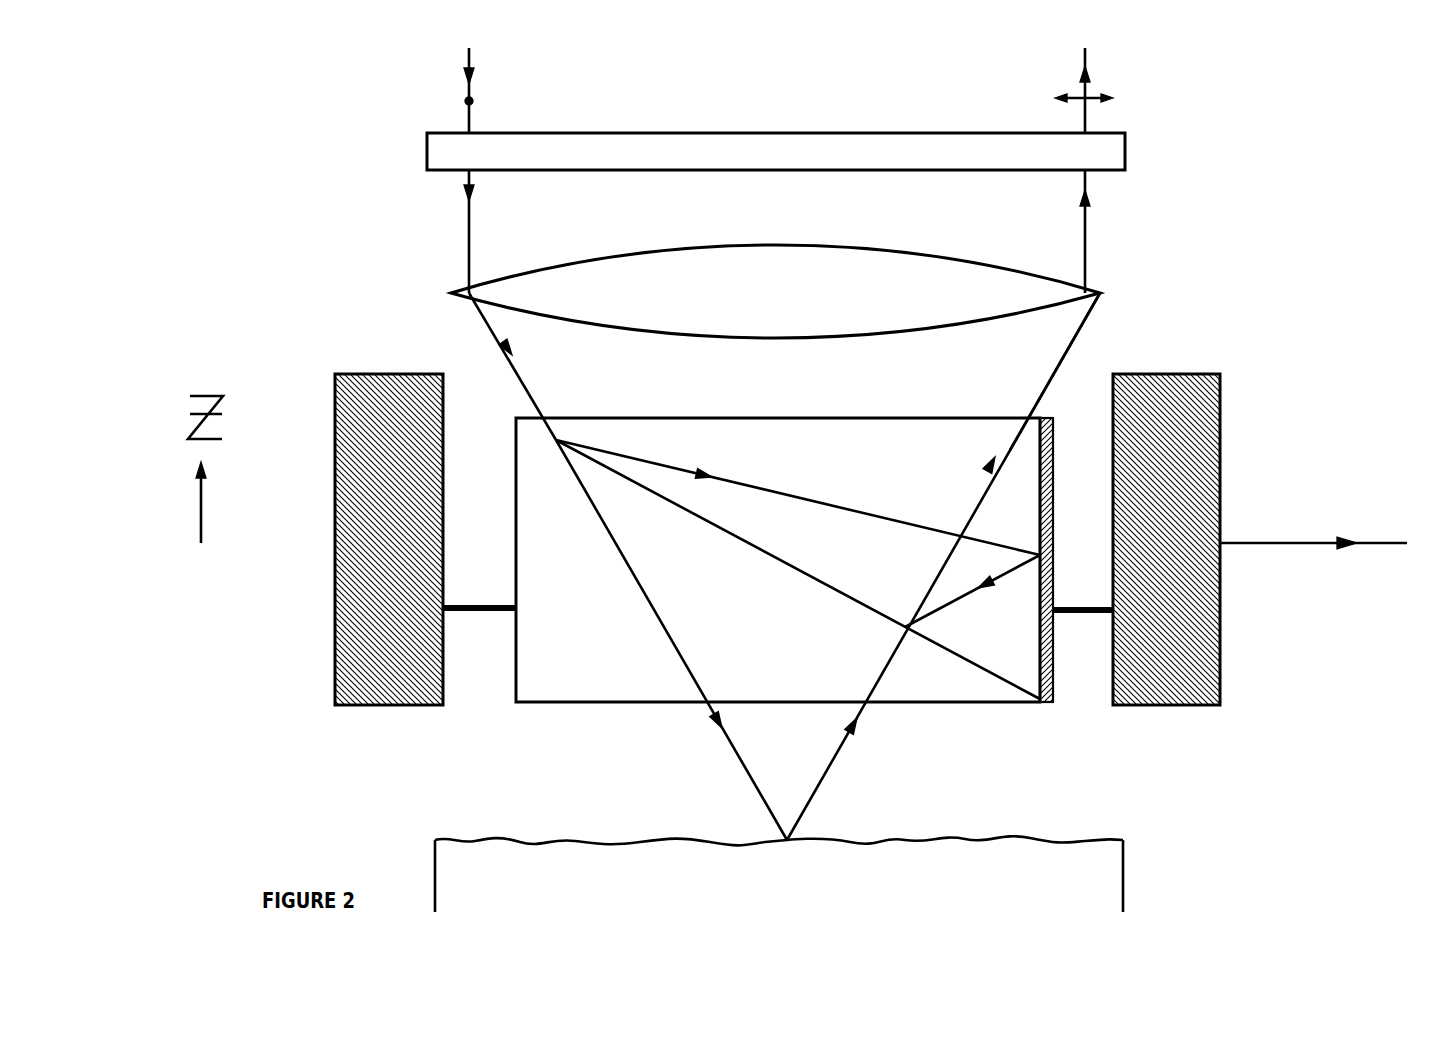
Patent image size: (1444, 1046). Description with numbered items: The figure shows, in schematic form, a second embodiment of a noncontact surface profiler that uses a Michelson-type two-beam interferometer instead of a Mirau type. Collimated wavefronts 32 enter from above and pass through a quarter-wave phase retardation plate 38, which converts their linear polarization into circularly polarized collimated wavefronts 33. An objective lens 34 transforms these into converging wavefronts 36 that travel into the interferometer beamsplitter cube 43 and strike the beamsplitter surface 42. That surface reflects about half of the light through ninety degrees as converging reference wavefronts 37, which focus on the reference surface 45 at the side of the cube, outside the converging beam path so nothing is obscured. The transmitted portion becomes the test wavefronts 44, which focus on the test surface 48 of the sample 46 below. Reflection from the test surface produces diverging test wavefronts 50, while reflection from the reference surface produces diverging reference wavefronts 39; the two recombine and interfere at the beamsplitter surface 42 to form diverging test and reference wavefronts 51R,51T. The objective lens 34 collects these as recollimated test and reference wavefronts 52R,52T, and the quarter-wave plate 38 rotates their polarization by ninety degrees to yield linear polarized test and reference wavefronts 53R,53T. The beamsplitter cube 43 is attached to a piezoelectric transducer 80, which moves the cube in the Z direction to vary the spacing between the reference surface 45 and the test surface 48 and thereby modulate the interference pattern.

The collimated wavefronts 32 is at (468, 89).
The quarter-wave phase retardation plate 38 is at (425, 143).
The circularly polarized collimated wavefronts 33 is at (467, 215).
The objective lens 34 is at (1020, 290).
The converging wavefronts 36 is at (517, 372).
The converging reference wavefronts 37 is at (790, 490).
The beamsplitter surface 42 is at (768, 560).
The interferometer beamsplitter cube 43 is at (592, 655).
The diverging reference wavefronts 39 is at (948, 600).
The reference surface 45 is at (1040, 598).
The test wavefronts 44 is at (722, 735).
The diverging test wavefronts 50 is at (828, 766).
The diverging test and reference wavefronts 51R,51T is at (1050, 361).
The recollimated test and reference wavefronts 52R,52T is at (1088, 217).
The linear polarized test and reference wavefronts 53R,53T is at (1090, 52).
The piezoelectric transducer 80 is at (1222, 455).
The test surface 48 is at (1082, 840).
The sample 46 is at (779, 876).